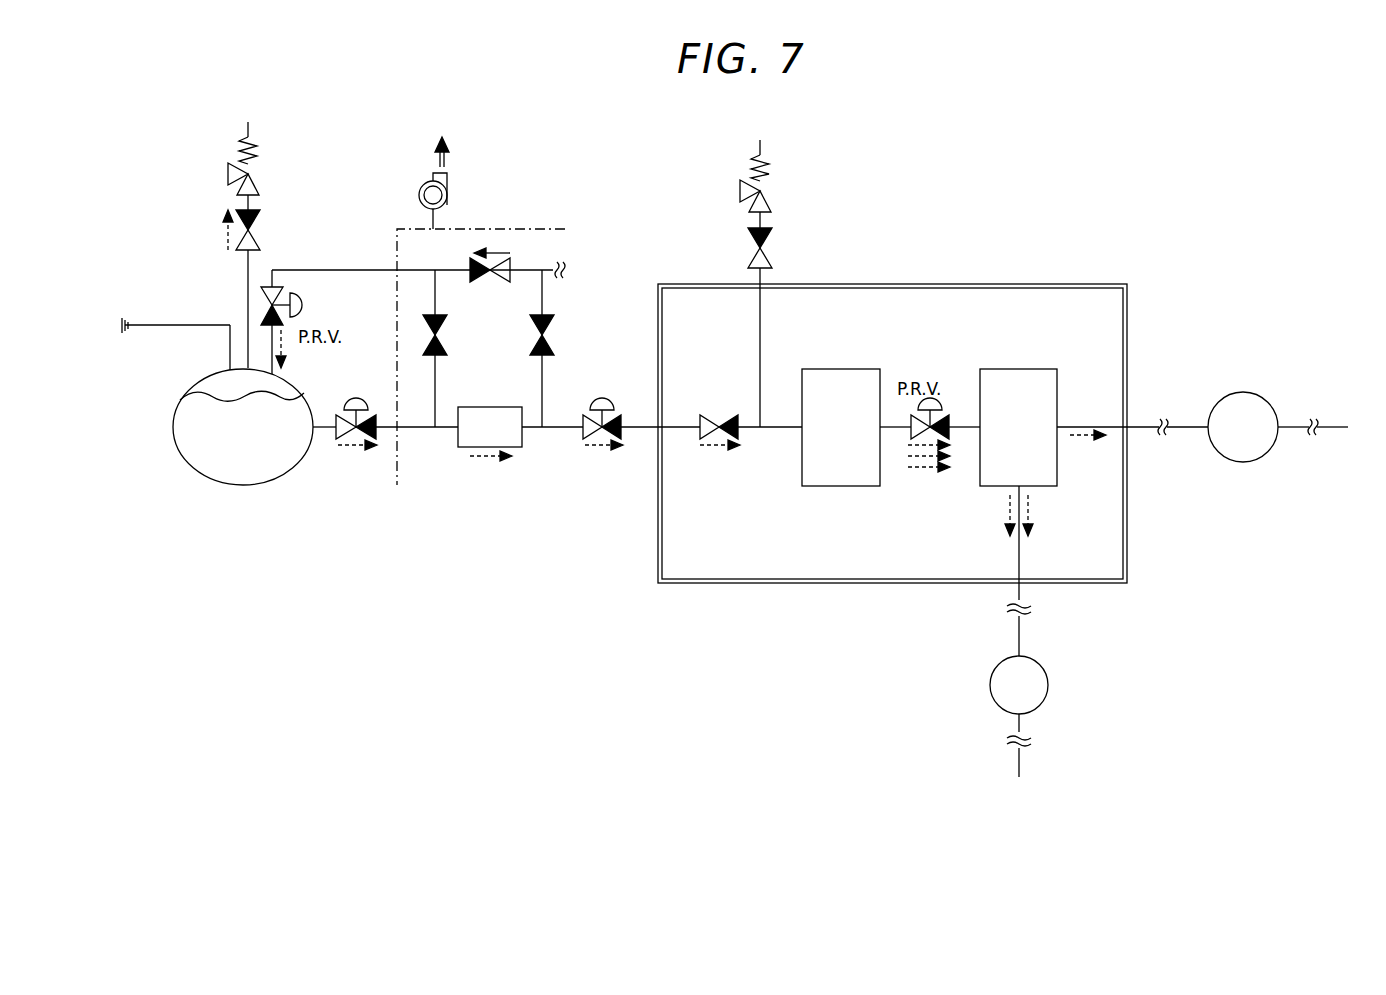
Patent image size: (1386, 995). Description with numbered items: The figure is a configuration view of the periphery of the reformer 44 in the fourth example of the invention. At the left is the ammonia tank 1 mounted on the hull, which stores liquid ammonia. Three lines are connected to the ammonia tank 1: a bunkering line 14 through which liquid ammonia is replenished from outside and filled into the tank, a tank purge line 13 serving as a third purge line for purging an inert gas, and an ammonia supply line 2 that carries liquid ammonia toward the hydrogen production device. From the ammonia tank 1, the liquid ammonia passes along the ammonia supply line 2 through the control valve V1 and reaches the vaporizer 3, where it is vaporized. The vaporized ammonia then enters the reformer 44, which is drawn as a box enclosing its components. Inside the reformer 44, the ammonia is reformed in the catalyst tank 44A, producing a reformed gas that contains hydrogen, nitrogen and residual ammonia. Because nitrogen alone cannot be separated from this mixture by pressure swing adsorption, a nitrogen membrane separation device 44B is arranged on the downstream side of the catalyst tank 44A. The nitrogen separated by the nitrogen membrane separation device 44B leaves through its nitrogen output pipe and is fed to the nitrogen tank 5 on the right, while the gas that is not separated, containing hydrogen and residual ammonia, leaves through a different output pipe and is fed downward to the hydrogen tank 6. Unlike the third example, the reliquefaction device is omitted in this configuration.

The ammonia tank 1 is at (291, 477).
The ammonia supply line 2 is at (321, 430).
The vaporizer 3 is at (489, 406).
The nitrogen tank 5 is at (1243, 391).
The hydrogen tank 6 is at (1048, 683).
The tank purge line 13 is at (328, 269).
The bunkering line 14 is at (168, 324).
The reformer 44 is at (1128, 537).
The catalyst tank 44A is at (841, 368).
The nitrogen membrane separation device 44B is at (1019, 368).
The control valve V1 is at (371, 416).